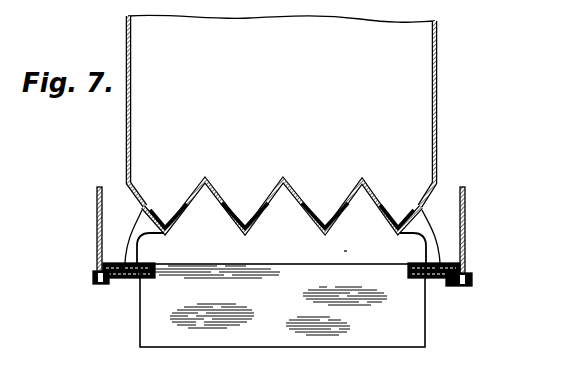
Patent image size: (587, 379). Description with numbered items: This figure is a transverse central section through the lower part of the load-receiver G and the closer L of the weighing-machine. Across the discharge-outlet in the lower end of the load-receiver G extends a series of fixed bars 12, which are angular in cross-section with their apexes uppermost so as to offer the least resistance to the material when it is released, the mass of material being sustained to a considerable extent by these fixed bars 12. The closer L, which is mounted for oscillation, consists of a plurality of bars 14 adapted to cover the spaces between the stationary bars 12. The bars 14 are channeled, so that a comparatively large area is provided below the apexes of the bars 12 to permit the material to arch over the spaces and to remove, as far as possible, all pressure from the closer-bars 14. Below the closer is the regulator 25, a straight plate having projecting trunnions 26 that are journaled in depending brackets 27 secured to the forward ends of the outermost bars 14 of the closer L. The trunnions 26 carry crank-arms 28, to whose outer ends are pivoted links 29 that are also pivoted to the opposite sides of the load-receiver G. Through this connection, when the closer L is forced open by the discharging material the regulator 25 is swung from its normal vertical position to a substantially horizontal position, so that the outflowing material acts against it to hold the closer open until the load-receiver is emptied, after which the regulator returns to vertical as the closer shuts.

The load-receiver G is at (293, 110).
The bars 12 is at (206, 181).
The bars 14 is at (164, 236).
The depending brackets 27 is at (127, 247).
The links 29 is at (97, 207).
The trunnions 26 is at (102, 270).
The crank-arms 28 is at (112, 284).
The regulator 25 is at (282, 305).
The closer L is at (340, 244).